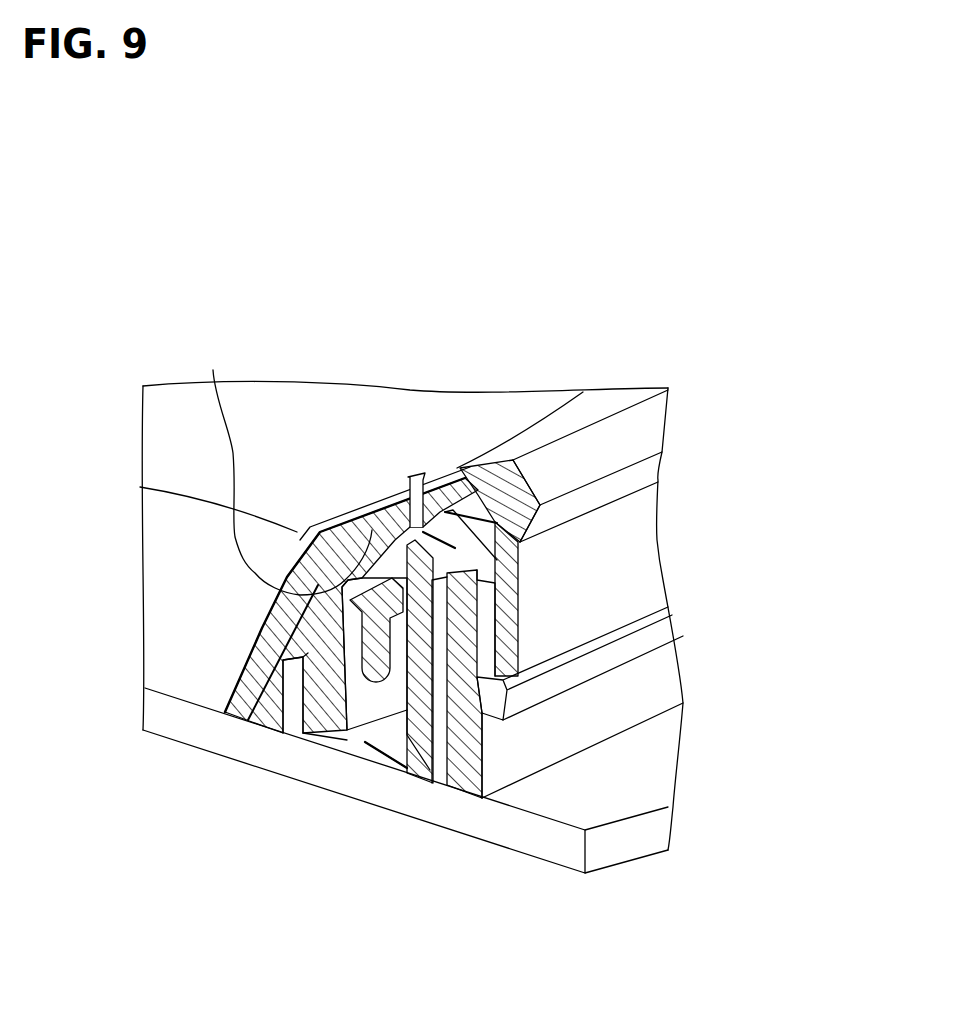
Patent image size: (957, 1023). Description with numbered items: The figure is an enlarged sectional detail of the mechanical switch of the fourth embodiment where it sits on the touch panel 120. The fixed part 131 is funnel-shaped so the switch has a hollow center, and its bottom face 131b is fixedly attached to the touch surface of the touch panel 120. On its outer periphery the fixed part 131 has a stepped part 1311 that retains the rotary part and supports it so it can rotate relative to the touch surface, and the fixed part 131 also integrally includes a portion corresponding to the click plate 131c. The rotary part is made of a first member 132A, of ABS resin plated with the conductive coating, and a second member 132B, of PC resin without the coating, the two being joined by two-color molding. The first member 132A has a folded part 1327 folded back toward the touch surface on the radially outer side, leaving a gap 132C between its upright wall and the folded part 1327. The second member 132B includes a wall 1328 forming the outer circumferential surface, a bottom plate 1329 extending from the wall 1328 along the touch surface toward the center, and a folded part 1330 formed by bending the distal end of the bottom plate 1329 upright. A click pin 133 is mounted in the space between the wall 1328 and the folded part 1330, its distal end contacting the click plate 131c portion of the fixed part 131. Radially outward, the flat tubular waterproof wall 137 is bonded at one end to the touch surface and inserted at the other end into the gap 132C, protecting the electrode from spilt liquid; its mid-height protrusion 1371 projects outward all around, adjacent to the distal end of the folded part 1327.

The touch panel 120 is at (633, 792).
The fixed part 131 is at (315, 553).
The bottom face 131b is at (231, 710).
The click plate 131c is at (275, 462).
The stepped part 1311 is at (363, 547).
The first member 132A is at (653, 524).
The second member 132B is at (329, 766).
The gap 132C is at (452, 465).
The click pin 133 is at (375, 617).
The waterproof wall 137 is at (470, 643).
The folded part 1327 is at (512, 577).
The wall 1328 is at (418, 667).
The bottom plate 1329 is at (372, 755).
The folded part 1330 is at (318, 728).
The protrusion 1371 is at (505, 696).